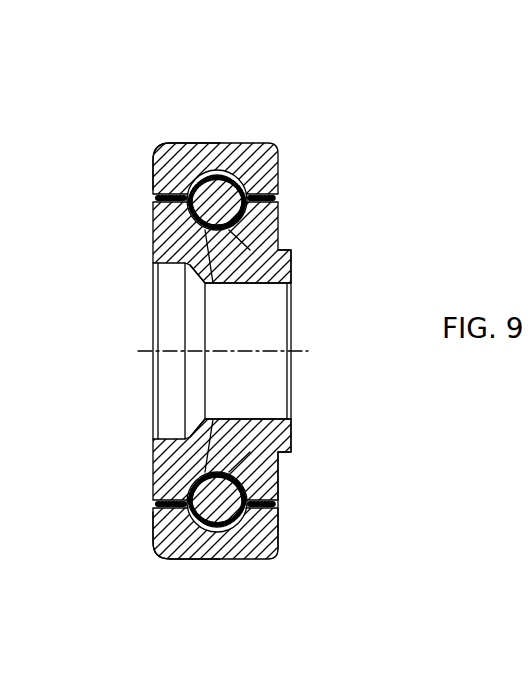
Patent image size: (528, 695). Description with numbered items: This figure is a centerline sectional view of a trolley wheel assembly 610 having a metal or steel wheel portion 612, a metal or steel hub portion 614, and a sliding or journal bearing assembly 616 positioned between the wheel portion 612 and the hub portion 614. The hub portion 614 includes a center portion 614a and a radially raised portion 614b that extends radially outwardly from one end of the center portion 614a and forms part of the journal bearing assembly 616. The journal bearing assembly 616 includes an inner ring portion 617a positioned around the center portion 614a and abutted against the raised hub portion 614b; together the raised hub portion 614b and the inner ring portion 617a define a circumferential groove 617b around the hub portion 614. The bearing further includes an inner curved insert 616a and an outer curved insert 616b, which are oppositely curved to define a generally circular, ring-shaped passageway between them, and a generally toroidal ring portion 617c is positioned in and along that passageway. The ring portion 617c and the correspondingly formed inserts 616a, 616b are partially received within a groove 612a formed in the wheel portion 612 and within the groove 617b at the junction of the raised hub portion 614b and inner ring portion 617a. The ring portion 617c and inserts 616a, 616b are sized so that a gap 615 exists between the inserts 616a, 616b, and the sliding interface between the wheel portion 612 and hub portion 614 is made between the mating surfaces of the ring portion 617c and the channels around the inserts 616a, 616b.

The trolley wheel assembly 610 is at (222, 102).
The wheel portion 612 is at (250, 138).
The groove 612a is at (180, 143).
The hub portion 614 is at (151, 339).
The center portion 614a is at (293, 262).
The radially raised portion 614b is at (153, 243).
The gap 615 is at (283, 199).
The journal bearing assembly 616 is at (333, 480).
The inner curved insert 616a is at (153, 207).
The outer curved insert 616b is at (153, 195).
The inner ring portion 617a is at (280, 240).
The groove 617b is at (215, 232).
The ring portion 617c is at (279, 182).